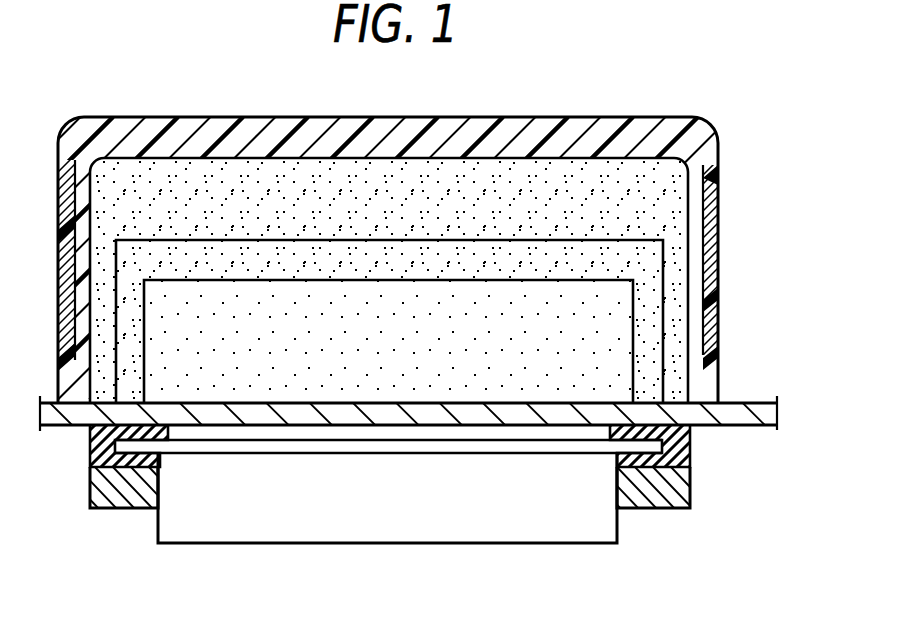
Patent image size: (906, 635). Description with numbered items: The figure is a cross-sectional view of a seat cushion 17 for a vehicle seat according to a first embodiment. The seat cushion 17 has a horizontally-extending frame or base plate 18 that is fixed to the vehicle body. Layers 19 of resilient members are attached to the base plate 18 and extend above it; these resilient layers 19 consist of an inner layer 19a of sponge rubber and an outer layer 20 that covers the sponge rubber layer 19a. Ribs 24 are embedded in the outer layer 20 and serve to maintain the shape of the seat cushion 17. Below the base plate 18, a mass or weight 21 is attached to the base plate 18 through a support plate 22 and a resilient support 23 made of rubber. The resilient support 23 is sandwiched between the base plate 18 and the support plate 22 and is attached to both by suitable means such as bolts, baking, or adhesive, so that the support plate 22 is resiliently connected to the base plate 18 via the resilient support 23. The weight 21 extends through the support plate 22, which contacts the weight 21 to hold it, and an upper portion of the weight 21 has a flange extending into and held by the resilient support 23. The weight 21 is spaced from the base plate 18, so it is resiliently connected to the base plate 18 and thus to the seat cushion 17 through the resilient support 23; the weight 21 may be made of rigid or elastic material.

The seat cushion 17 is at (114, 116).
The base plate 18 is at (762, 401).
The layers of resilient members 19 is at (810, 231).
The inner layer of sponge rubber 19a is at (675, 256).
The outer layer 20 is at (708, 269).
The weight 21 is at (568, 543).
The support plate 22 is at (668, 493).
The resilient support 23 is at (678, 448).
The ribs 24 is at (712, 196).